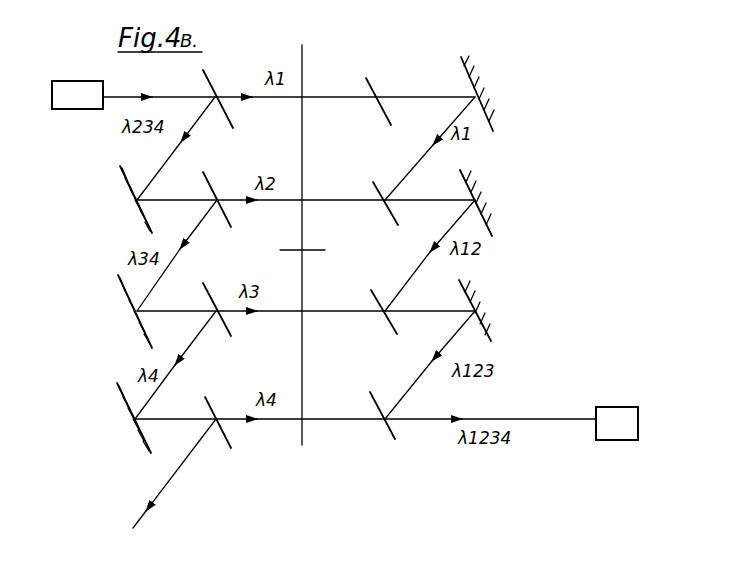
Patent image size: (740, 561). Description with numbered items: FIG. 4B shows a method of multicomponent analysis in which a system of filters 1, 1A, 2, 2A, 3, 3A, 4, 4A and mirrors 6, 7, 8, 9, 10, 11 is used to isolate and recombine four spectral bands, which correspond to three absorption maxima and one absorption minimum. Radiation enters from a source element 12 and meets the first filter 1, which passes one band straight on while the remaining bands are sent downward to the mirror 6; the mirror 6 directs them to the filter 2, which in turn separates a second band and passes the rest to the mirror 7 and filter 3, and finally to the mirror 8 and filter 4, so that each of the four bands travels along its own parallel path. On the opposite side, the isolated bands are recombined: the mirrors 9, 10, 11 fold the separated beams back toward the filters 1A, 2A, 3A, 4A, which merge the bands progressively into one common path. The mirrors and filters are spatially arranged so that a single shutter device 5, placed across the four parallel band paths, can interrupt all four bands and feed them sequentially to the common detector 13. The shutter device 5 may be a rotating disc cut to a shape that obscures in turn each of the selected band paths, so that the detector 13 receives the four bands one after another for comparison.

The filter 1 is at (225, 120).
The filter 2 is at (223, 222).
The filter 3 is at (222, 322).
The filter 4 is at (226, 438).
The filter 1A is at (375, 88).
The filter 2A is at (393, 222).
The filter 3A is at (389, 323).
The filter 4A is at (388, 432).
The shutter device 5 is at (302, 437).
The mirror 6 is at (130, 201).
The mirror 7 is at (128, 311).
The mirror 8 is at (129, 414).
The mirror 9 is at (484, 104).
The mirror 10 is at (485, 210).
The mirror 11 is at (478, 302).
The light source 12 is at (72, 92).
The common detector 13 is at (606, 432).